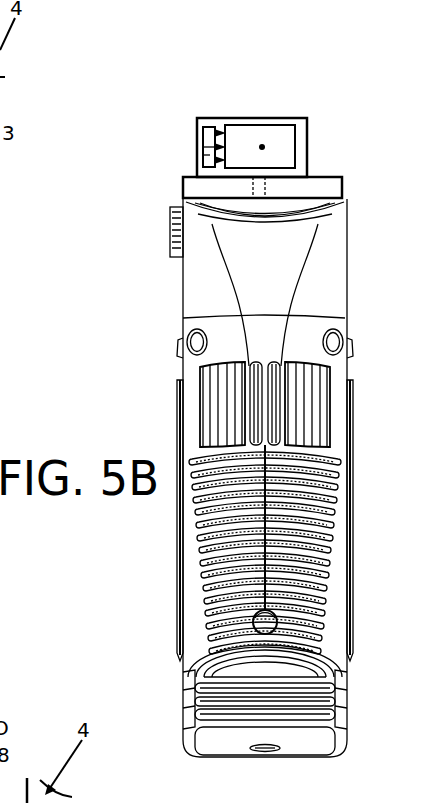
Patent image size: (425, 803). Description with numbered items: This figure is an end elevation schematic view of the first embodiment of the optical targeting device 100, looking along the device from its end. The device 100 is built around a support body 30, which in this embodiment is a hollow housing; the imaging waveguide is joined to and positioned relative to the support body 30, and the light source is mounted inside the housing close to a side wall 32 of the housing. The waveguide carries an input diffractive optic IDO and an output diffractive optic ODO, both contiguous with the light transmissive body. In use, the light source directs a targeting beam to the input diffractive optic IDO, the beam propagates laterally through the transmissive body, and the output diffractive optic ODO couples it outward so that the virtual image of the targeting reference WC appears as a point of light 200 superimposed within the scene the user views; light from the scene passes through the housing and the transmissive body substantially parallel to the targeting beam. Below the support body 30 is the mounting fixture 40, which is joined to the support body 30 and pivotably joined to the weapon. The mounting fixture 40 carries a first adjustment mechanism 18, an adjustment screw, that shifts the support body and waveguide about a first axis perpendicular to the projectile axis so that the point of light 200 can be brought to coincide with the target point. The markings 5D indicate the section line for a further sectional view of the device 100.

The optical targeting device 100 is at (235, 80).
The support body 30 is at (252, 118).
The input diffractive optic IDO is at (207, 128).
The output diffractive optic ODO is at (280, 125).
The side wall 32 is at (200, 152).
The targeting reference WC is at (202, 155).
The point of light 200 is at (262, 147).
The mounting fixture 40 is at (342, 188).
The first adjustment mechanism 18 is at (257, 189).
The section line 5D is at (190, 103).